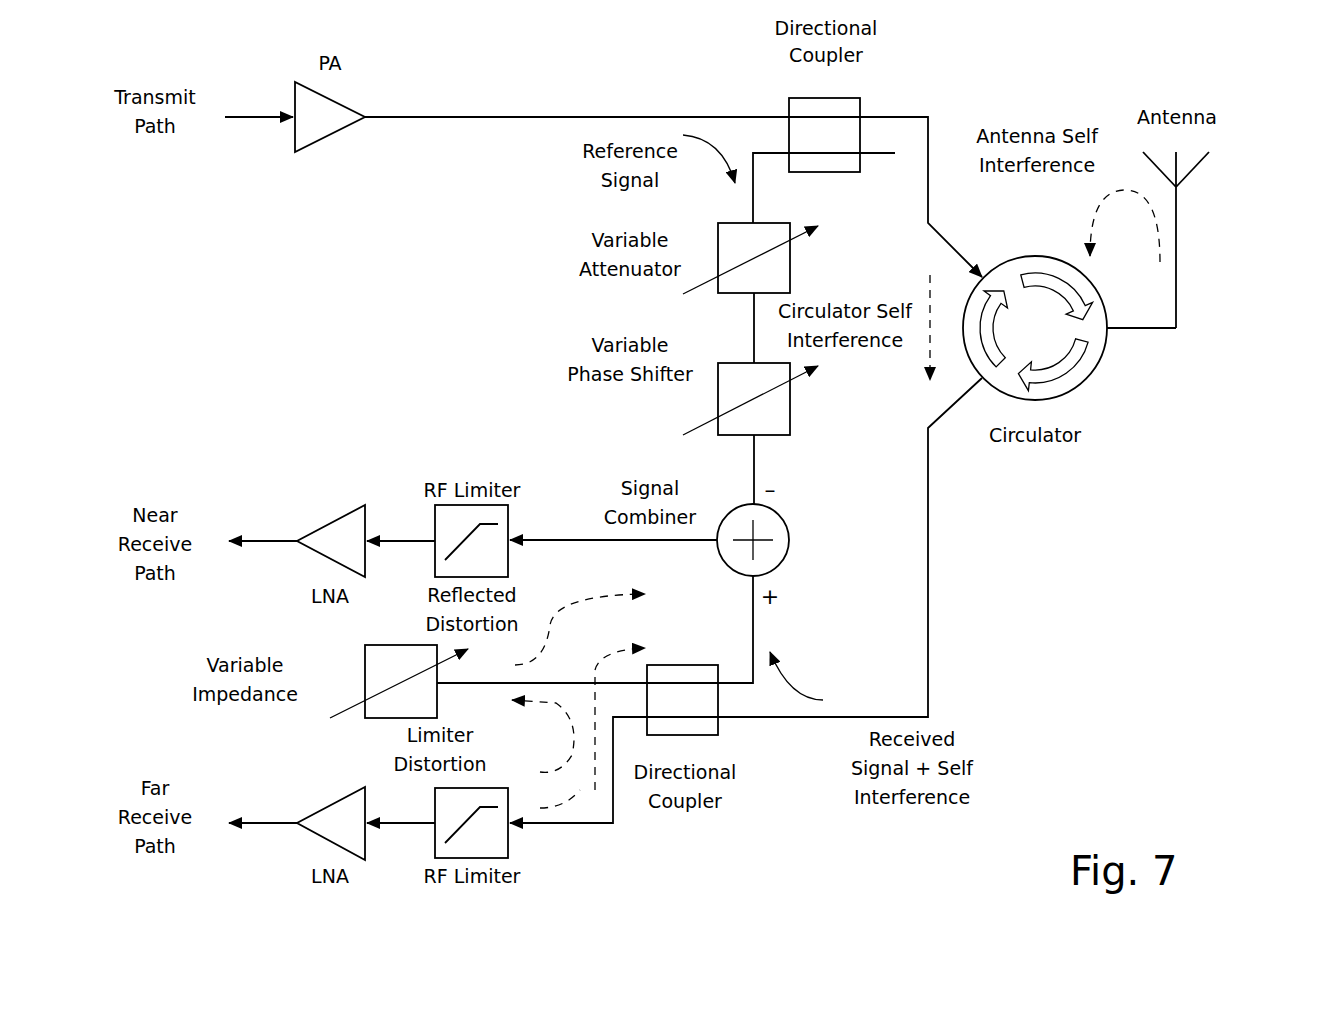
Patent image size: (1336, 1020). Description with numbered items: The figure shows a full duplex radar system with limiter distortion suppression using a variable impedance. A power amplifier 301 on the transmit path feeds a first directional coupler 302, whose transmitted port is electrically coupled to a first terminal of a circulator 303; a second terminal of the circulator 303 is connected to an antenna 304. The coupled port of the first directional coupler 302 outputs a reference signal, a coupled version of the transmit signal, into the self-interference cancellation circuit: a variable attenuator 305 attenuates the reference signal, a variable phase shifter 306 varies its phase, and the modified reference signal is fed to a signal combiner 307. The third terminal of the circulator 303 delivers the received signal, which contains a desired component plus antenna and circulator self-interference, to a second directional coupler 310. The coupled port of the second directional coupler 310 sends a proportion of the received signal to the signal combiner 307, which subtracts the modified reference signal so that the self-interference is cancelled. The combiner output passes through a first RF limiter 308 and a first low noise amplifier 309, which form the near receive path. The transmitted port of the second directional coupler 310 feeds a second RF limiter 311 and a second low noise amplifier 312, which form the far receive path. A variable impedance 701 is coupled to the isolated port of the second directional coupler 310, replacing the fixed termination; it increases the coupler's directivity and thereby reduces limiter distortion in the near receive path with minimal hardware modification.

The power amplifier 301 is at (347, 102).
The first directional coupler 302 is at (864, 96).
The circulator 303 is at (1107, 371).
The antenna 304 is at (1217, 164).
The variable attenuator 305 is at (658, 284).
The variable phase shifter 306 is at (670, 358).
The signal combiner 307 is at (800, 547).
The first Radio Frequency (RF) limiter 308 is at (431, 507).
The first Low Noise Amplifier 309 is at (317, 521).
The second directional coupler 310 is at (715, 741).
The second Radio Frequency (RF) limiter 311 is at (512, 839).
The second Low Noise Amplifier 312 is at (357, 869).
The variable impedance 701 is at (353, 650).